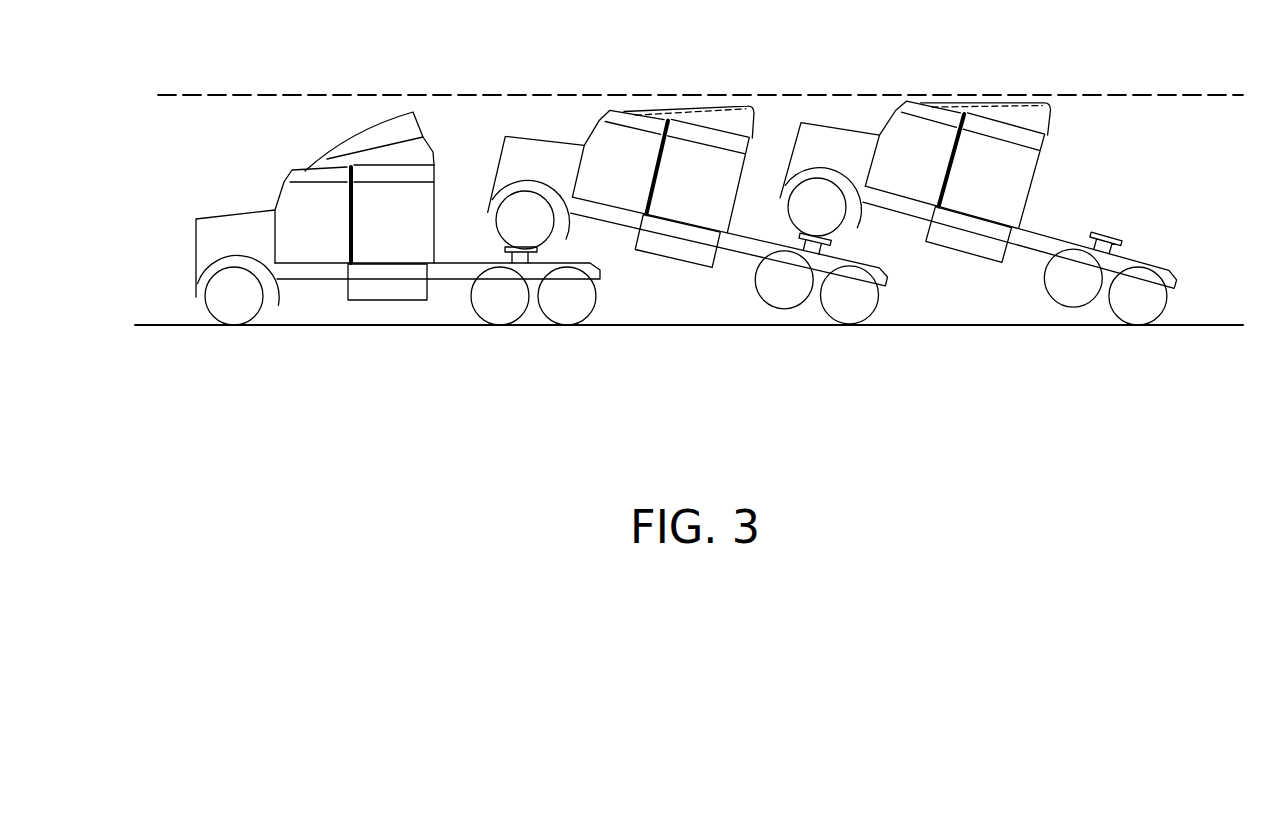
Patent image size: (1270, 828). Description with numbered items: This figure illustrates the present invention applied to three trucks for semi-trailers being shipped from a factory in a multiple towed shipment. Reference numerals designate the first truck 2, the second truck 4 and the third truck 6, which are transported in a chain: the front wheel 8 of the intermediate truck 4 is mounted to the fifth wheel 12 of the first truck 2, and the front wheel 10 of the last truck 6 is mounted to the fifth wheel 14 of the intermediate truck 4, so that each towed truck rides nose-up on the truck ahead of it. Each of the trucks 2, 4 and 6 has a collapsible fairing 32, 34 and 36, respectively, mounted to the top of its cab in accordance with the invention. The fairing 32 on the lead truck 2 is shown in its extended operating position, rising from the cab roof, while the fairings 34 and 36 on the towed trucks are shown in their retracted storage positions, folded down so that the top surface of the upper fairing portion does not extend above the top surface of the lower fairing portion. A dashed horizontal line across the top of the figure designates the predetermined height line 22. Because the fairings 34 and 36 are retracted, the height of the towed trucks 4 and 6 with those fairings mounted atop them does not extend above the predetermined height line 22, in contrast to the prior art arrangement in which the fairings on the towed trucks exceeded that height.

The first truck 2 is at (404, 251).
The second truck 4 is at (677, 204).
The third truck 6 is at (957, 204).
The front wheel 8 is at (493, 240).
The front wheel 10 is at (787, 228).
The fifth wheel 12 is at (540, 250).
The fifth wheel 14 is at (830, 240).
The predetermined height line 22 is at (1124, 93).
The collapsible fairing 32 is at (328, 142).
The collapsible fairing 34 is at (637, 78).
The collapsible fairing 36 is at (980, 78).